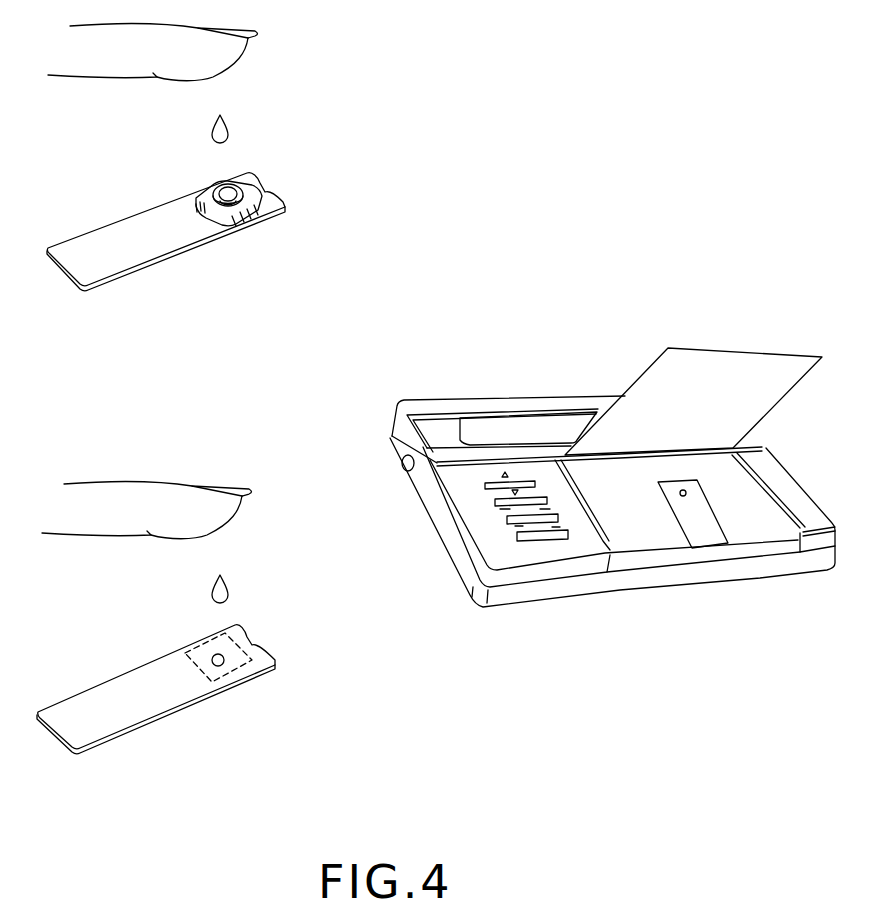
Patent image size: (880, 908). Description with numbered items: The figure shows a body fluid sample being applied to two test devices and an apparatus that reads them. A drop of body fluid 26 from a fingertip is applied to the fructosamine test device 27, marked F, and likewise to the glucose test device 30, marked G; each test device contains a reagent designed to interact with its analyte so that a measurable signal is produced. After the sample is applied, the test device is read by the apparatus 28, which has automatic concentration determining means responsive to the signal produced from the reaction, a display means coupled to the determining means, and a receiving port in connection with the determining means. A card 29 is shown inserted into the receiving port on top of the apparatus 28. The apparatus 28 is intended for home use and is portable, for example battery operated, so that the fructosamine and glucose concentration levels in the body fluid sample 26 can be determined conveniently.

The drop of body fluid 26 is at (212, 131).
The test strip F with sensor 27 is at (143, 270).
The measuring device 28 is at (572, 402).
The card 29 is at (750, 418).
The test strip G 30 is at (143, 725).